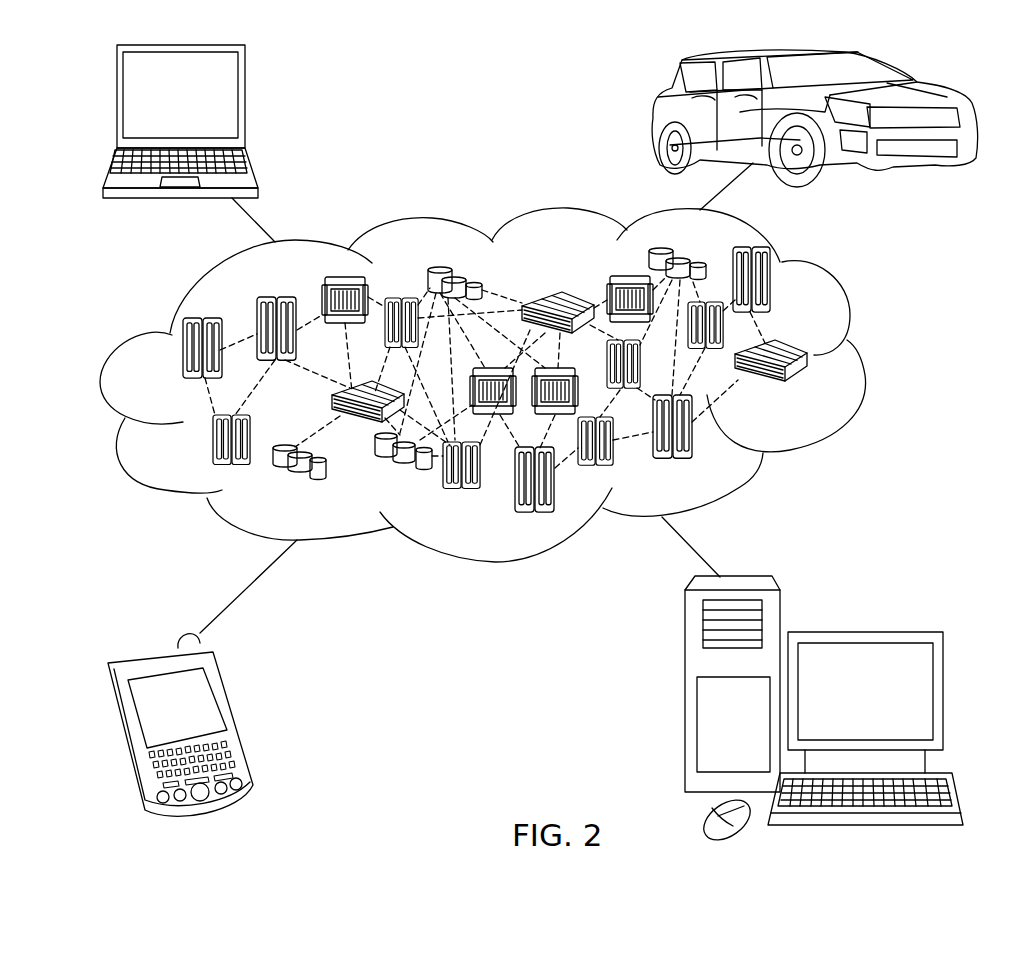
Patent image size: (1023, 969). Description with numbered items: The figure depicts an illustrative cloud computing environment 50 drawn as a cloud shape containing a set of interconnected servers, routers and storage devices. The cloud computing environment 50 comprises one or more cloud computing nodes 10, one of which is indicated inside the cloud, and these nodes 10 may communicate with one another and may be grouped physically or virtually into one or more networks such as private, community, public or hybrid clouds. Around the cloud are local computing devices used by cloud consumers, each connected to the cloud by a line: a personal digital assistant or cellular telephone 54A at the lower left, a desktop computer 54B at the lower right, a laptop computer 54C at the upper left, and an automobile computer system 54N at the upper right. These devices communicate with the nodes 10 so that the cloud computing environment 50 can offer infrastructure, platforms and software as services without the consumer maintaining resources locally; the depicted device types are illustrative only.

The laptop computer 54C is at (246, 103).
The automobile computer system 54N is at (652, 117).
The personal digital assistant (PDA) or cellular telephone 54A is at (237, 718).
The desktop computer 54B is at (860, 632).
The cloud computing environment 50 is at (510, 398).
The cloud computing node 10 is at (808, 388).